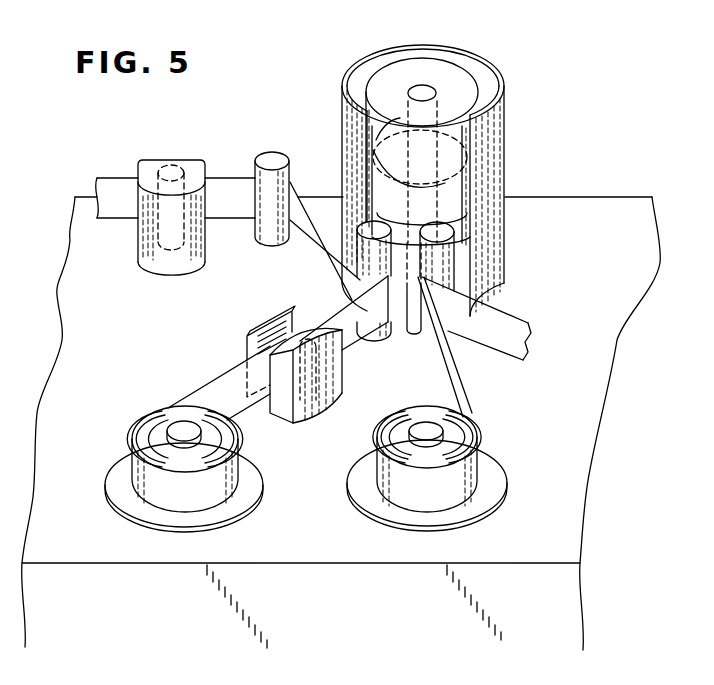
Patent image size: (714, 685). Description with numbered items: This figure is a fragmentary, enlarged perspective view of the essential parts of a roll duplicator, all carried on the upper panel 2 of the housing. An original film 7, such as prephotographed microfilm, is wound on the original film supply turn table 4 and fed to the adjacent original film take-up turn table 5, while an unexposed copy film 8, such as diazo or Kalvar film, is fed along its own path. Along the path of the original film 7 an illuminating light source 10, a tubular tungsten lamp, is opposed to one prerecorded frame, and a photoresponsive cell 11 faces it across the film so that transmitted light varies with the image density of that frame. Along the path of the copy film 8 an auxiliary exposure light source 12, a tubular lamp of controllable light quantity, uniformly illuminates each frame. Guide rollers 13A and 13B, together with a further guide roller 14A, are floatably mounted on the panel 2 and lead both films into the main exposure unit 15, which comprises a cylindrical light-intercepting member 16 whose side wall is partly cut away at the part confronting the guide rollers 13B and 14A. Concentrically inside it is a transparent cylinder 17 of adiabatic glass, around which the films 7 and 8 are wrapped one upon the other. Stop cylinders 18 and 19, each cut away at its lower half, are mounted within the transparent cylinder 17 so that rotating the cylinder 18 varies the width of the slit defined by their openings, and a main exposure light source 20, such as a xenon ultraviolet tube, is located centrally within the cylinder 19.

The upper panel 2 is at (608, 208).
The original film supply turn table 4 is at (118, 472).
The original film take-up turn table 5 is at (490, 472).
The original film 7 is at (222, 388).
The copy film 8 is at (112, 188).
The illuminating light source 10 is at (305, 395).
The photoresponsive cell 11 is at (263, 326).
The auxiliary exposure light source 12 is at (172, 170).
The guide roller 13A is at (273, 155).
The guide roller 13B is at (368, 340).
The guide roller 14A is at (448, 335).
The main exposure unit 15 is at (412, 194).
The cylindrical light-intercepting member 16 is at (480, 62).
The transparent cylinder 17 is at (409, 303).
The stop cylinder 18 is at (462, 170).
The stop cylinder 19 is at (427, 210).
The main exposure light source 20 is at (416, 88).